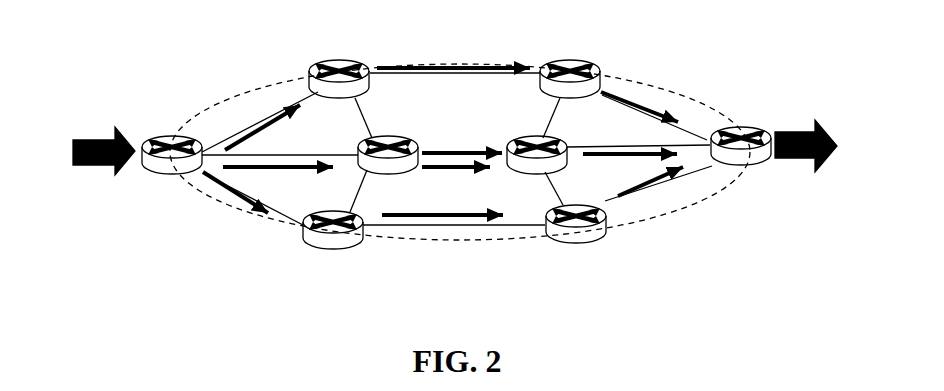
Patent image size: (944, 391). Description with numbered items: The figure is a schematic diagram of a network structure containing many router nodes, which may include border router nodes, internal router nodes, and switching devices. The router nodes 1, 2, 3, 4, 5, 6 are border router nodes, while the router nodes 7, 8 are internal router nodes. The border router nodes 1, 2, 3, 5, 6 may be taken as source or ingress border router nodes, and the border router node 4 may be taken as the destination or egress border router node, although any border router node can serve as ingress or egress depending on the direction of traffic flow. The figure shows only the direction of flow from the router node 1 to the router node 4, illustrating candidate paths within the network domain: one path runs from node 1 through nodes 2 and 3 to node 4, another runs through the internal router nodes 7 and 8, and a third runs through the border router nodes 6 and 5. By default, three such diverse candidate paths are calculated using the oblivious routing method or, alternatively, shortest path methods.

The border router node 1 is at (172, 176).
The border router node 2 is at (339, 59).
The border router node 3 is at (570, 59).
The border router node 4 is at (741, 125).
The border router node 5 is at (576, 247).
The border router node 6 is at (333, 249).
The internal router node 7 is at (388, 175).
The internal router node 8 is at (537, 175).